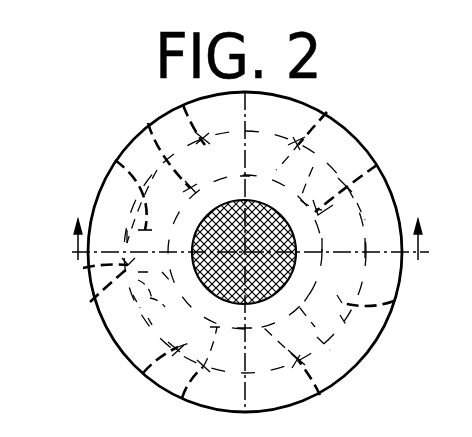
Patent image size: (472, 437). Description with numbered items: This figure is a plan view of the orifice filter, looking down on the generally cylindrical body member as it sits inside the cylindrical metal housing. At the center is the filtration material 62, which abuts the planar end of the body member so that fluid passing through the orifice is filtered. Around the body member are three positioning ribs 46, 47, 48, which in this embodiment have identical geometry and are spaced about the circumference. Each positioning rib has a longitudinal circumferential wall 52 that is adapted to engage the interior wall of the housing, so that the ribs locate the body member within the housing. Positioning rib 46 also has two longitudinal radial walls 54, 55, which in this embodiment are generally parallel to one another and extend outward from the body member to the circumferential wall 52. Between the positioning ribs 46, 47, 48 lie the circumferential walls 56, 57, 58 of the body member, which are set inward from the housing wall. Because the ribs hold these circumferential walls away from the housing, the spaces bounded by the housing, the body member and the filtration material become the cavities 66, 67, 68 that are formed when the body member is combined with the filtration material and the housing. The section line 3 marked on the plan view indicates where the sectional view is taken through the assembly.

The section line 3- 3 is at (252, 223).
The positioning rib 46 is at (98, 300).
The positioning rib 47 is at (325, 112).
The positioning rib 48 is at (318, 396).
The longitudinal circumferential wall 52 is at (83, 268).
The longitudinal radial wall 54 is at (118, 163).
The longitudinal radial wall 55 is at (150, 303).
The circumferential wall 56 is at (150, 125).
The circumferential wall 57 is at (377, 165).
The circumferential wall 58 is at (180, 401).
The filtration material 62 is at (275, 258).
The cavity 66 is at (182, 102).
The cavity 67 is at (390, 298).
The cavity 68 is at (143, 375).